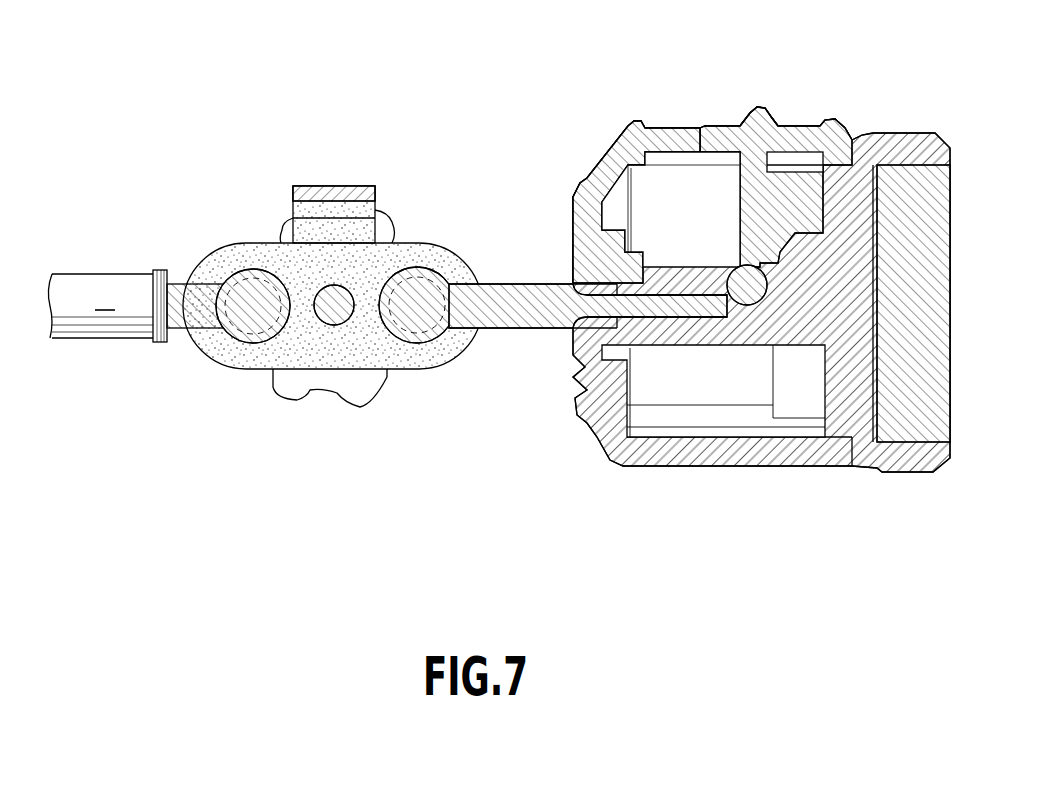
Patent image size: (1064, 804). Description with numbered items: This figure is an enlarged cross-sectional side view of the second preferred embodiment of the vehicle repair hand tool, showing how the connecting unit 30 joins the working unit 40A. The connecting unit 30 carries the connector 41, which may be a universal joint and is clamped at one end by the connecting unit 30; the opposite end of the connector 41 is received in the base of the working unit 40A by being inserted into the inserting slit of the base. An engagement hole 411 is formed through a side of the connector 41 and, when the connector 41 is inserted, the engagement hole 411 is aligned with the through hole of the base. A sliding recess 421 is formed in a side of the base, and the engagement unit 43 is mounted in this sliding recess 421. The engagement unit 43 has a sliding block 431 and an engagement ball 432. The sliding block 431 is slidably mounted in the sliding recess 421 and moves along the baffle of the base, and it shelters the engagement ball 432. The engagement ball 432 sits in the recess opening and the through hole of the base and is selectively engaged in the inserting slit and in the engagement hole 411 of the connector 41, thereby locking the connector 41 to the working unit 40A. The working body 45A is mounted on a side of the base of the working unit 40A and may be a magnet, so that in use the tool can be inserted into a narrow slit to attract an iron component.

The connecting unit 30 is at (248, 207).
The connector 41 is at (596, 345).
The engagement hole 411 is at (742, 320).
The sliding recess 421 is at (657, 132).
The engagement unit 43 is at (771, 156).
The sliding block 431 is at (757, 113).
The engagement ball 432 is at (745, 283).
The working unit 40A is at (922, 110).
The working body 45A is at (923, 292).